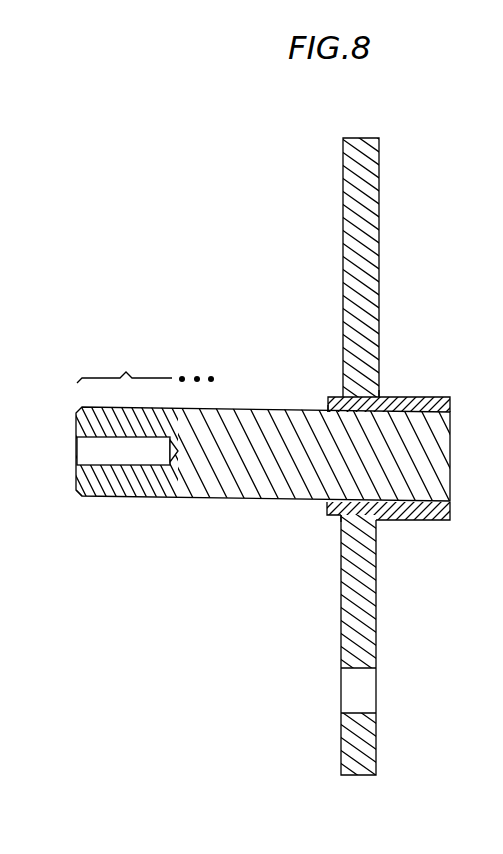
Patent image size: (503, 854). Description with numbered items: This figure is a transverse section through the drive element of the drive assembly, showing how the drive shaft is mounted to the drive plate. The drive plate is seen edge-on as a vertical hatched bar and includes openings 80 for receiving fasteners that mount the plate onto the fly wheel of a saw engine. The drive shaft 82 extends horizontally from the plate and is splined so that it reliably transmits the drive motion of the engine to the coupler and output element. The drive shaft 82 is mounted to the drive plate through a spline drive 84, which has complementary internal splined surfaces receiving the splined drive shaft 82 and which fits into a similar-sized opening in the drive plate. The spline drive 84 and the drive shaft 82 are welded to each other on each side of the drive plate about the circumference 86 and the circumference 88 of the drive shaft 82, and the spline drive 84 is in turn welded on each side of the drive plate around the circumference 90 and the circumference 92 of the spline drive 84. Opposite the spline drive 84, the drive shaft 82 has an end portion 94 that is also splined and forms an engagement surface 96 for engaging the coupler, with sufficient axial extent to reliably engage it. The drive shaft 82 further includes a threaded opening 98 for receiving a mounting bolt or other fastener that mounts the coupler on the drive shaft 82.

The openings 80 is at (352, 688).
The drive shaft 82 is at (218, 500).
The spline drive 84 is at (400, 521).
The circumference 86 is at (446, 413).
The circumference 88 is at (328, 412).
The circumference 90 is at (379, 397).
The circumference 92 is at (341, 517).
The end portion 94 is at (108, 515).
The engagement surface 96 is at (145, 369).
The threaded opening 98 is at (78, 450).